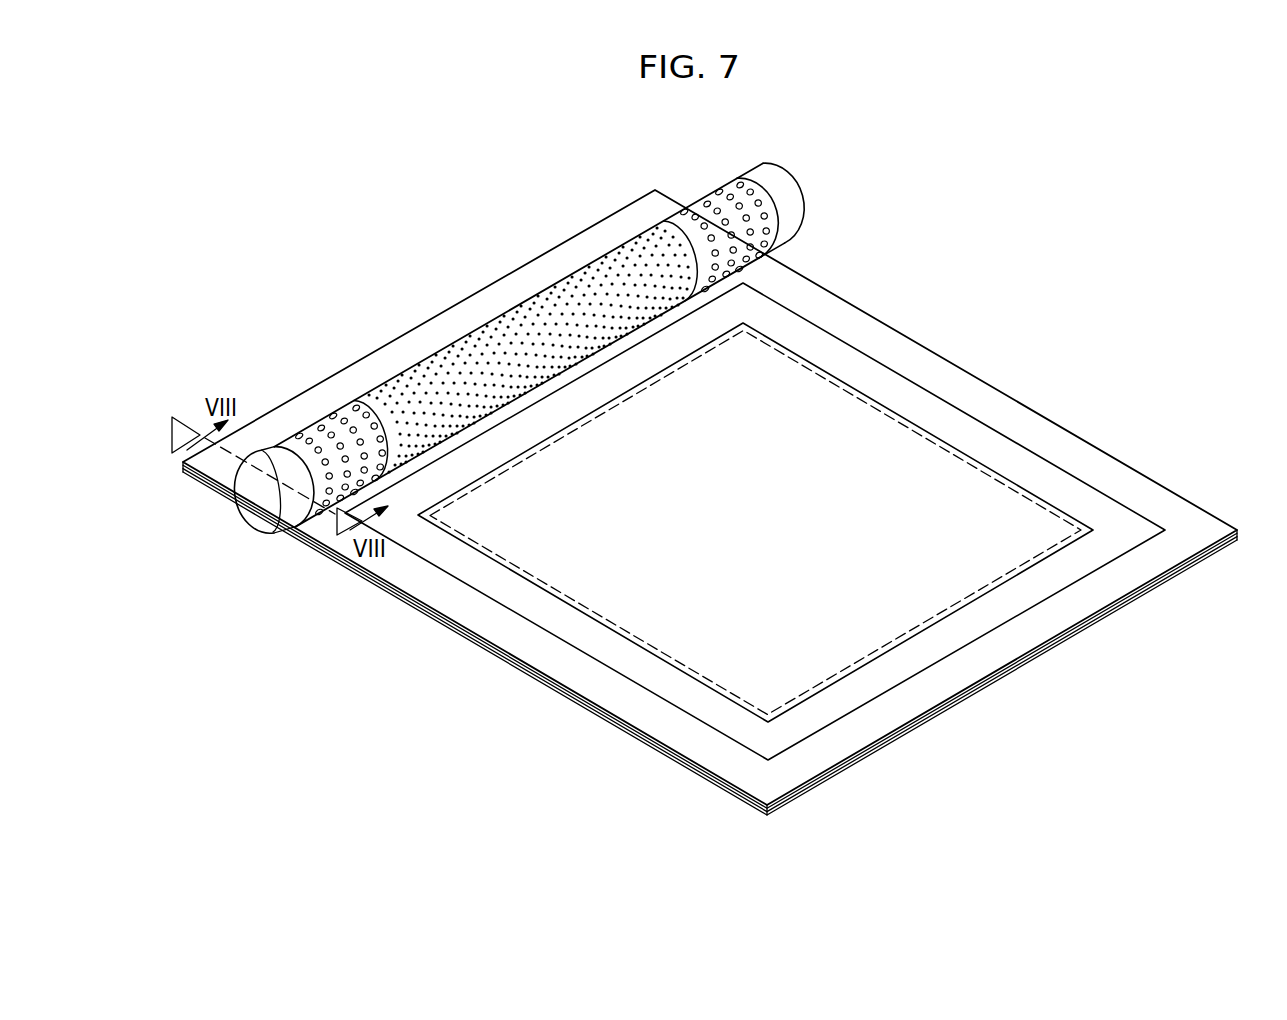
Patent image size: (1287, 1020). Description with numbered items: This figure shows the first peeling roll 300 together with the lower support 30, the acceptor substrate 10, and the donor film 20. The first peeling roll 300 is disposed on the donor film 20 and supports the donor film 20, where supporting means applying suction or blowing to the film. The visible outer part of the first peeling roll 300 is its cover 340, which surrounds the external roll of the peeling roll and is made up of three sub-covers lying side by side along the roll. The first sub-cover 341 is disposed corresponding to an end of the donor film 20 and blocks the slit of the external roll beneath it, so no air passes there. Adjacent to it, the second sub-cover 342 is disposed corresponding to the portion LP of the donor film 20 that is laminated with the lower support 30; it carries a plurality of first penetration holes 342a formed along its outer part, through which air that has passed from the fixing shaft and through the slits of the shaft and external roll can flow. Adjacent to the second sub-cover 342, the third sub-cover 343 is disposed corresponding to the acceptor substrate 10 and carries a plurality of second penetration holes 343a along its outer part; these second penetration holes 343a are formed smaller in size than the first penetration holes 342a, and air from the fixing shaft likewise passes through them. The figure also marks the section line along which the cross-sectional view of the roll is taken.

The first peeling roll 300 is at (799, 183).
The cover 340 is at (373, 247).
The first sub-cover 341 is at (285, 445).
The second sub-cover 342 is at (482, 373).
The first penetration holes 342a is at (305, 460).
The third sub-cover 343 is at (417, 370).
The second penetration holes 343a is at (480, 337).
The acceptor substrate 10 is at (997, 473).
The donor film 20 is at (493, 634).
The lower support 30 is at (428, 616).
The portion of the donor film laminated with the lower support LP is at (565, 627).